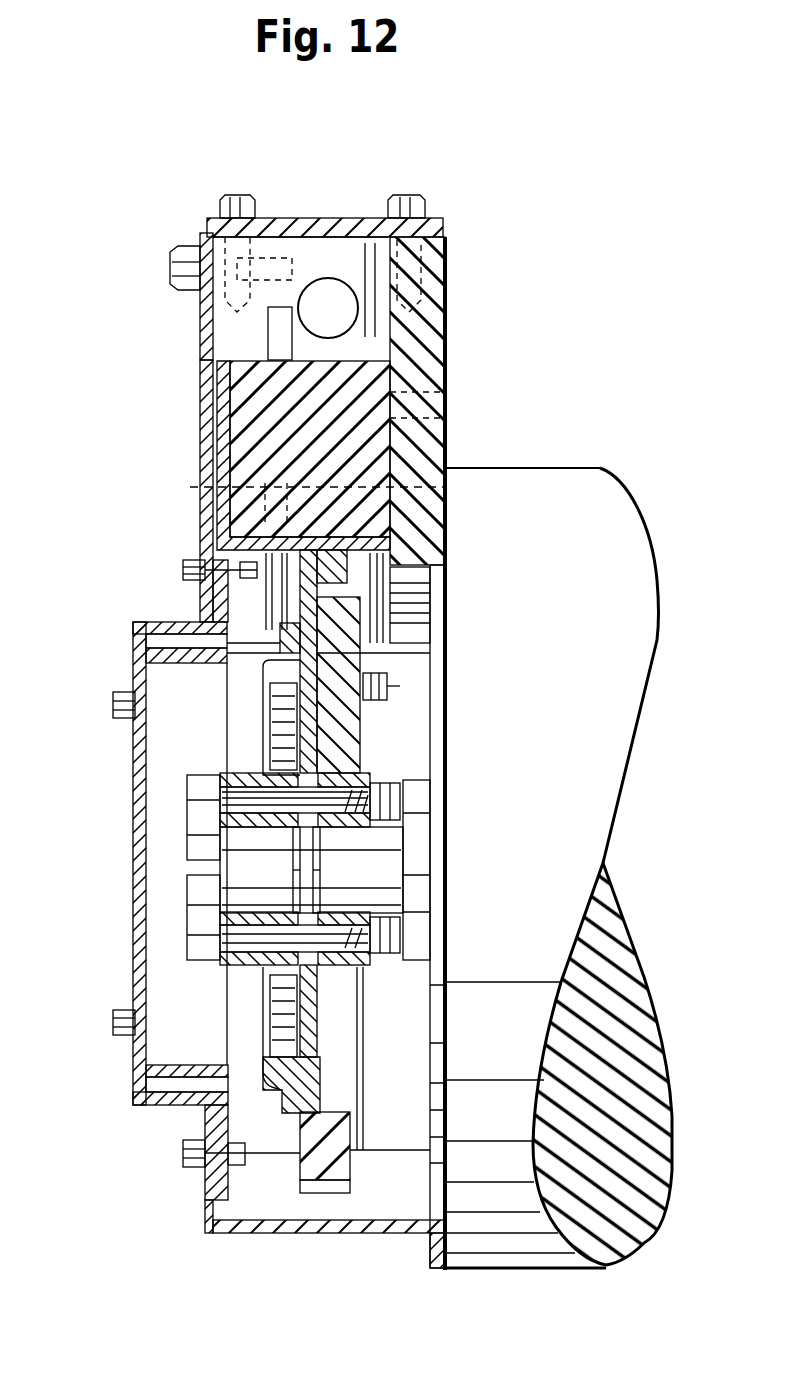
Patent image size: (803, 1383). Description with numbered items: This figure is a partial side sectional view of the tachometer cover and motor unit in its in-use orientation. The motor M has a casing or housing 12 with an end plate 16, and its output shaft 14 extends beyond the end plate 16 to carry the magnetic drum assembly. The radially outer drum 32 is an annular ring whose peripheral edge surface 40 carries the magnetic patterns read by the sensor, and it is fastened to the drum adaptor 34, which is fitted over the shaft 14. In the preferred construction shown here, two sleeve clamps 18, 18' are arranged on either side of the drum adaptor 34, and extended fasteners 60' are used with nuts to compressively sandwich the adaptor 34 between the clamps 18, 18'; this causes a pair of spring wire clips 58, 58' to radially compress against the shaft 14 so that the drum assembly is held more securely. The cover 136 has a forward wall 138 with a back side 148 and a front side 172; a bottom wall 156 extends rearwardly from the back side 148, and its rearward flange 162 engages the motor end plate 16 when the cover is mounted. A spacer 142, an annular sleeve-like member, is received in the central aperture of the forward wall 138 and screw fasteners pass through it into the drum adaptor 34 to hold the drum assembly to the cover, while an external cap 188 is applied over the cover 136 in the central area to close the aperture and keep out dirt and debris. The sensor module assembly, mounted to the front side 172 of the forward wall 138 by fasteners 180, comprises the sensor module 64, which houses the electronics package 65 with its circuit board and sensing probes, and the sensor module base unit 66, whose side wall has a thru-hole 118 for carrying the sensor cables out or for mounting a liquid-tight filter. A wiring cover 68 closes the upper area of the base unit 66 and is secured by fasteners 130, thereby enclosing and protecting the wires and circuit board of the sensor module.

The casing 12 is at (538, 468).
The motor M is at (660, 492).
The output shaft 14 is at (420, 862).
The end plate 16 is at (440, 634).
The sleeve clamp 18 is at (323, 661).
The second sleeve clamp 18' is at (275, 780).
The drum 32 is at (337, 1158).
The drum adaptor 34 is at (273, 730).
The peripheral edge surface 40 is at (322, 1185).
The spring wire clip 58 is at (346, 870).
The second clip 58' is at (267, 870).
The extended fasteners 60' is at (286, 940).
The sensor module 64 is at (222, 487).
The electronics package 65 is at (255, 432).
The sensor module base unit 66 is at (450, 360).
The wiring cover 68 is at (358, 215).
The thru-hole 118 is at (328, 285).
The fasteners 130 is at (405, 195).
The cover 136 is at (225, 1240).
The forward wall 138 is at (200, 380).
The spacer 142 is at (165, 1108).
The back side 148 is at (207, 332).
The bottom wall 156 is at (285, 1233).
The flange 162 is at (428, 1252).
The front side 172 is at (215, 468).
The fasteners 180 is at (170, 270).
The external cap 188 is at (135, 945).